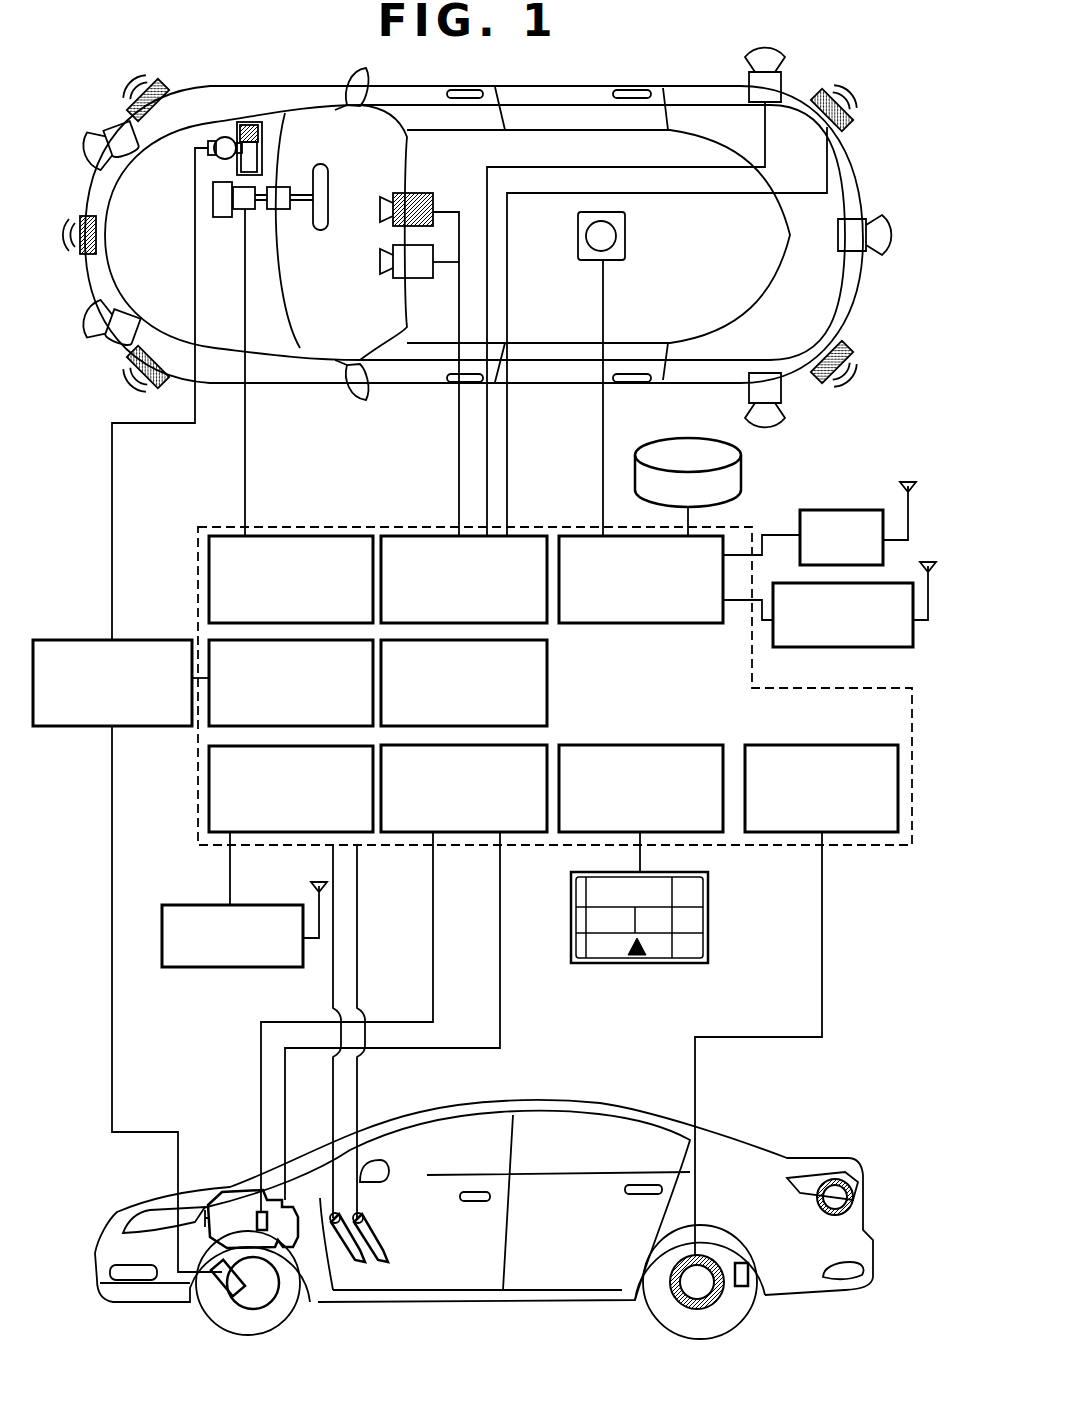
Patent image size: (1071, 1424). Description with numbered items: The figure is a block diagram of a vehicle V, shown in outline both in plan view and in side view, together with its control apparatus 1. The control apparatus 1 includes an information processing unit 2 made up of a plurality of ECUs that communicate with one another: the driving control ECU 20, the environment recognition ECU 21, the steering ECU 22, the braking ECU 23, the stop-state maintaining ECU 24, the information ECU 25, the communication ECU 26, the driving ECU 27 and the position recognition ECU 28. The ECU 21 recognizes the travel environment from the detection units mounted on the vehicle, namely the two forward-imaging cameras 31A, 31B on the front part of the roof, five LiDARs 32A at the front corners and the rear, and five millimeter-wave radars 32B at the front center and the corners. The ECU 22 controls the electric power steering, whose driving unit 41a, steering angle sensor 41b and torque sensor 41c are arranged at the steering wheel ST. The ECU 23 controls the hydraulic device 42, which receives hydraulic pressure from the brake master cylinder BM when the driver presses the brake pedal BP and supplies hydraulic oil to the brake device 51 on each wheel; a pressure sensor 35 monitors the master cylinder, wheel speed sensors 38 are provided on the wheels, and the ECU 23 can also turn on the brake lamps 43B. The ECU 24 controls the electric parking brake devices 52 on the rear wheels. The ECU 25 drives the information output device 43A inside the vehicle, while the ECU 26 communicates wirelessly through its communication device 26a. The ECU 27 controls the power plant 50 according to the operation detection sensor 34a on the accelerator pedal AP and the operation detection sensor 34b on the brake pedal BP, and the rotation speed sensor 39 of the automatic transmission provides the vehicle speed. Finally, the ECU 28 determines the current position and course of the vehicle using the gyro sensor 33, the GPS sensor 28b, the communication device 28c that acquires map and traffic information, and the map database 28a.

The control apparatus 1 is at (860, 482).
The information processing unit 2 is at (363, 526).
The driving control ECU 20 is at (548, 683).
The environment recognition ECU 21 is at (522, 535).
The steering ECU 22 is at (283, 535).
The braking ECU 23 is at (209, 728).
The stop-state maintaining ECU 24 is at (830, 744).
The information ECU 25 is at (658, 744).
The communication ECU 26 is at (209, 798).
The communication device 26a is at (245, 968).
The driving ECU 27 is at (470, 833).
The position recognition ECU 28 is at (725, 535).
The database 28a is at (680, 437).
The GPS sensor 28b is at (838, 509).
The communication device 28c is at (850, 648).
The camera 31A is at (398, 283).
The camera 31B is at (452, 186).
The LiDAR 32A is at (133, 155).
The radar 32B is at (162, 90).
The gyro sensor 33 is at (586, 262).
The operation detection sensor 34a is at (333, 1175).
The operation detection sensor 34b is at (363, 1216).
The pressure sensor 35 is at (248, 125).
The wheel speed sensor 38 is at (744, 1288).
The rotation speed sensor 39 is at (253, 1192).
The driving unit 41a is at (262, 210).
The steering angle sensor 41b is at (224, 218).
The torque sensor 41c is at (248, 186).
The hydraulic device 42 is at (82, 639).
The information output device 43A is at (668, 964).
The brake lamp 43B is at (835, 1180).
The power plant 50 is at (290, 1295).
The brake device 51 is at (225, 1290).
The electric parking brake device 52 is at (685, 1305).
The accelerator pedal AP is at (363, 1264).
The brake pedal BP is at (388, 1264).
The brake master cylinder BM is at (222, 136).
The steering wheel ST is at (322, 163).
The vehicle V is at (870, 147).